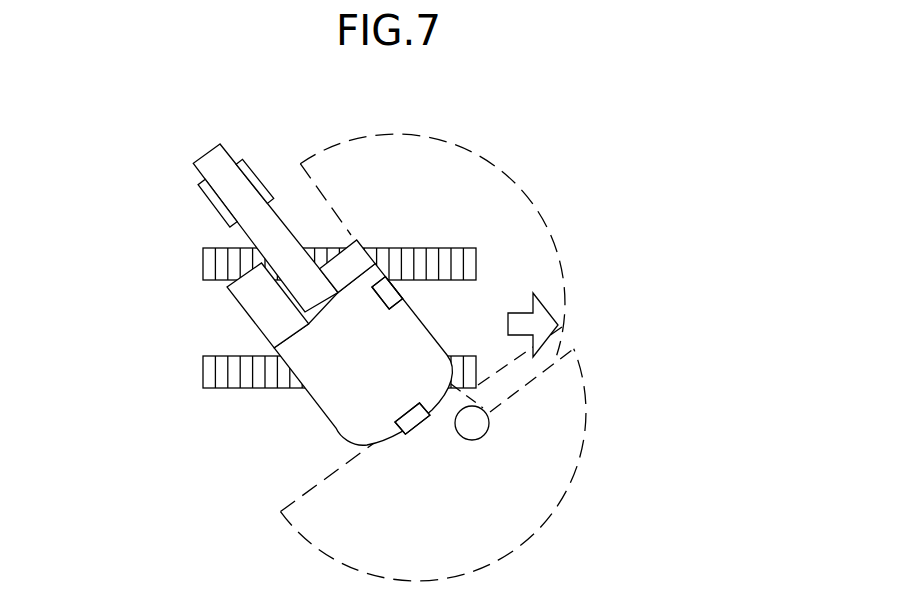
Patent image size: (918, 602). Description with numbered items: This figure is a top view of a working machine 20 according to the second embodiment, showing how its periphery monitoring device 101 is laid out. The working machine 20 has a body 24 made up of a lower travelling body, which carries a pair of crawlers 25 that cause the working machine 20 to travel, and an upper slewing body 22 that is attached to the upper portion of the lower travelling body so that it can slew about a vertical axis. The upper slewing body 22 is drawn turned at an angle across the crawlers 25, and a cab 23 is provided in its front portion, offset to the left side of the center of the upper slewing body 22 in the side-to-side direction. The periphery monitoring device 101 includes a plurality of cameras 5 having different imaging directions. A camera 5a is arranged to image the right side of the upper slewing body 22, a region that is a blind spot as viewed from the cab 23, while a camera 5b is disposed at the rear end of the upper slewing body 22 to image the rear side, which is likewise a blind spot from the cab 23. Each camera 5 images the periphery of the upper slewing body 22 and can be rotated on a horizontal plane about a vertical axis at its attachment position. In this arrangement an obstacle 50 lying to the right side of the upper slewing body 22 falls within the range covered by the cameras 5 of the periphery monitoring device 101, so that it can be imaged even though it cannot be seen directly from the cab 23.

The working machine 20 is at (157, 208).
The upper slewing body 22 is at (343, 397).
The cab 23 is at (256, 302).
The body 24 is at (288, 435).
The crawlers 25 is at (203, 375).
The camera 5 is at (401, 356).
The camera 5a is at (393, 297).
The camera 5b is at (413, 420).
The obstacle 50 is at (487, 432).
The periphery monitoring device 101 is at (680, 212).